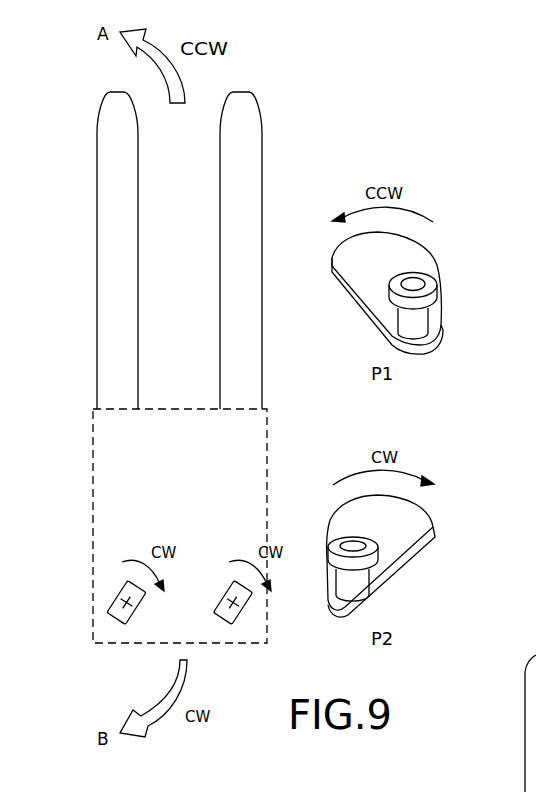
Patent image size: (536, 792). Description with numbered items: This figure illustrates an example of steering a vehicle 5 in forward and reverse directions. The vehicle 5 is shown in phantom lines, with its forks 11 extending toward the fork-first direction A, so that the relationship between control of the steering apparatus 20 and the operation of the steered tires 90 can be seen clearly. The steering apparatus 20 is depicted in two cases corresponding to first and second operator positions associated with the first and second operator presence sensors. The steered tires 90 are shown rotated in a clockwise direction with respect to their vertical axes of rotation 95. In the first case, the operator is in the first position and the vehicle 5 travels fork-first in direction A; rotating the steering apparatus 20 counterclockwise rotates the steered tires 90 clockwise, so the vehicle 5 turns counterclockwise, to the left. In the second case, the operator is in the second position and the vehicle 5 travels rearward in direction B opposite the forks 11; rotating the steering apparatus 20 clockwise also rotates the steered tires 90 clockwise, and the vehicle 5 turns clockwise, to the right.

The vehicle 5 is at (91, 433).
The arms 11 is at (220, 302).
The steering apparatus 20 is at (348, 306).
The steered tires 90 is at (120, 622).
The vertical axes of rotation 95 is at (123, 607).